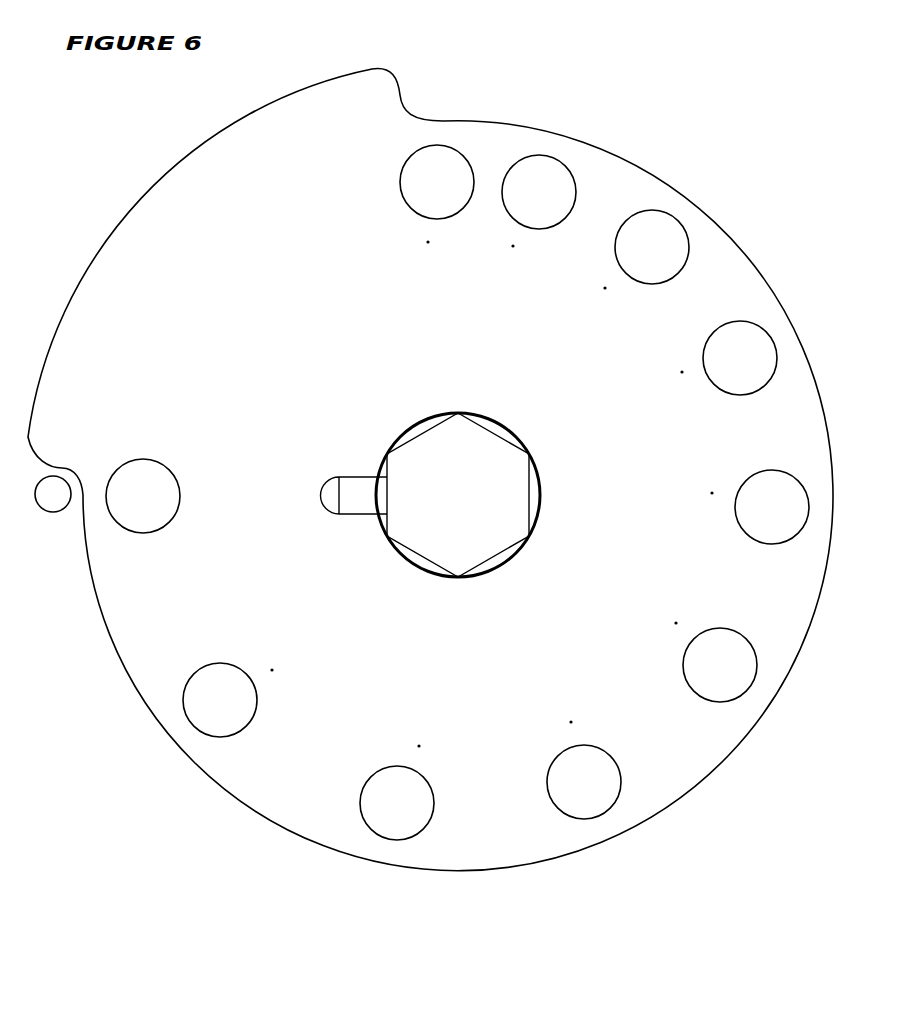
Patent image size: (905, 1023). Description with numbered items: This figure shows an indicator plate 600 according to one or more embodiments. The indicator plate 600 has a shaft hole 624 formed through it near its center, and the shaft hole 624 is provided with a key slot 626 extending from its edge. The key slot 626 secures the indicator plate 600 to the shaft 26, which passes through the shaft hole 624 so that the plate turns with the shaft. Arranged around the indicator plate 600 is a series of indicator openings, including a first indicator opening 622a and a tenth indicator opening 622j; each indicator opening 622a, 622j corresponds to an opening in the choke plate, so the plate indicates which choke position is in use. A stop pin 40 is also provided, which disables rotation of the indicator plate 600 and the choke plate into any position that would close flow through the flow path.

The indicator plate 600 is at (731, 62).
The tenth indicator opening 622j is at (400, 182).
The first indicator opening 622a is at (145, 459).
The stop pin 40 is at (52, 494).
The shaft hole 624 is at (541, 495).
The shaft 26 is at (488, 443).
The key slot 626 is at (328, 479).